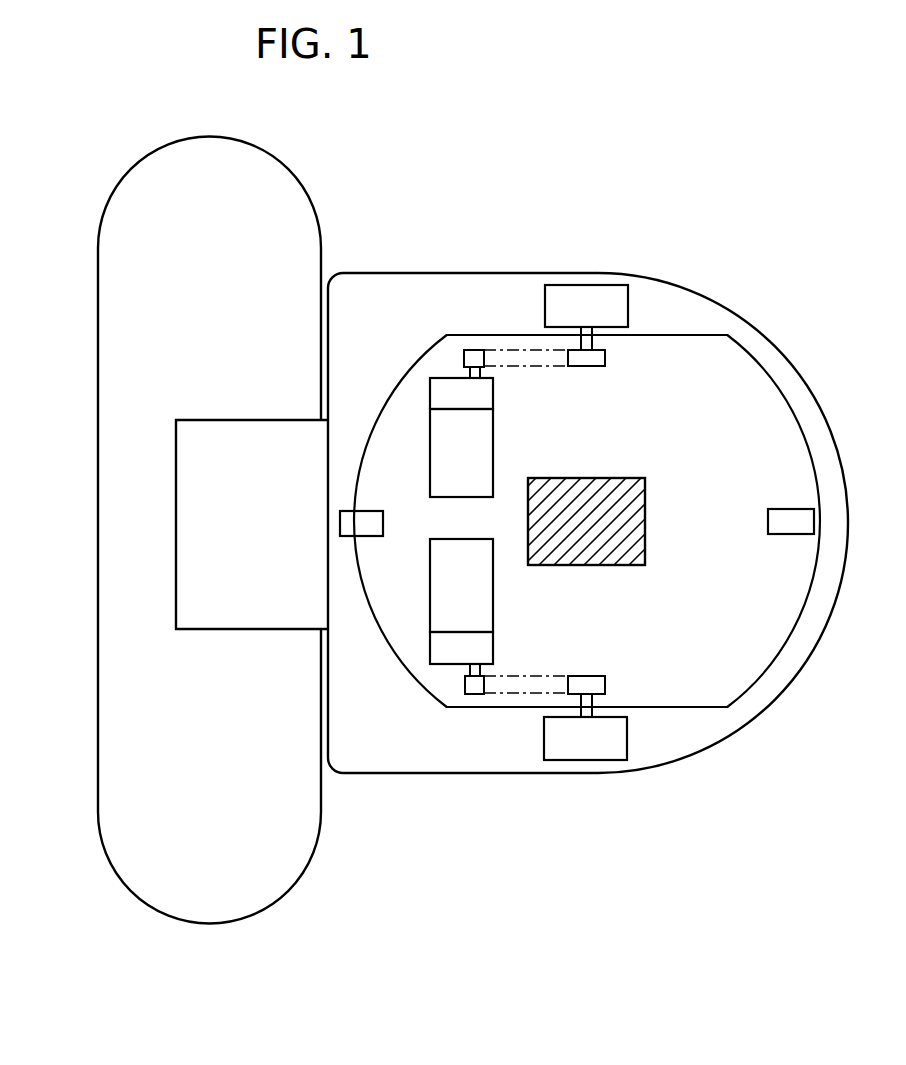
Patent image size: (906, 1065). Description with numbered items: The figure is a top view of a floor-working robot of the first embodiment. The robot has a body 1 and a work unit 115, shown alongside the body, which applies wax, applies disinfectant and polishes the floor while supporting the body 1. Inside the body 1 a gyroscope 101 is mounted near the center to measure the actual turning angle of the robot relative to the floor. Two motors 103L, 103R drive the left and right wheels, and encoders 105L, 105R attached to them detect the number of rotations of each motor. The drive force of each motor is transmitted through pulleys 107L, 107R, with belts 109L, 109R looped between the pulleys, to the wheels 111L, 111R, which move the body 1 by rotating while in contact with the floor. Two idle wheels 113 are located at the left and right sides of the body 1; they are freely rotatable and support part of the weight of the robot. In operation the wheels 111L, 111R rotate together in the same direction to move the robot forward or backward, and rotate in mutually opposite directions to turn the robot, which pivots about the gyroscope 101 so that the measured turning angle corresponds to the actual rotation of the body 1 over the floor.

The body 1 is at (748, 325).
The gyroscope 101 is at (645, 503).
The motor 103L is at (488, 440).
The motor 103R is at (485, 588).
The encoder 105L is at (488, 393).
The encoder 105R is at (485, 645).
The pulley 107L is at (473, 350).
The pulley 107R is at (475, 690).
The belt 109L is at (530, 350).
The belt 109R is at (527, 693).
The wheel 111L is at (582, 293).
The wheel 111R is at (590, 747).
The idle wheel 113 is at (368, 508).
The work unit 115 is at (135, 539).